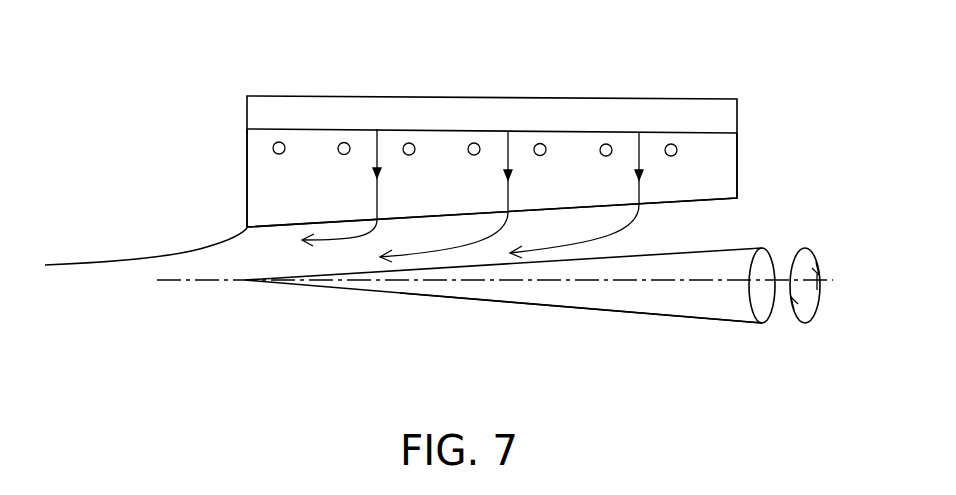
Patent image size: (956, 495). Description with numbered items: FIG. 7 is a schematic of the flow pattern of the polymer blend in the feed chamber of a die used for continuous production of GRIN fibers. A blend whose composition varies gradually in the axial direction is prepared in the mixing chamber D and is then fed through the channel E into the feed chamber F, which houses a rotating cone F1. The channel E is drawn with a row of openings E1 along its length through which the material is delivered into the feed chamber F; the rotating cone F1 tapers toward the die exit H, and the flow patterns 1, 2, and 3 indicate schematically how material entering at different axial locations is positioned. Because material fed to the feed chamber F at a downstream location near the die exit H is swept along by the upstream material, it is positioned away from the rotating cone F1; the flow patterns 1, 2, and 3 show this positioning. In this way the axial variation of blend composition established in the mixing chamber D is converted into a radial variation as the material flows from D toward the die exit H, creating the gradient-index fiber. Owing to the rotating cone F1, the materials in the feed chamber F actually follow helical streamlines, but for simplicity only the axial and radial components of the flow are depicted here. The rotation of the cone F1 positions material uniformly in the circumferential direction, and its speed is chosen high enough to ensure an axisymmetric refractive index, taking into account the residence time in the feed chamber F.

The mixing chamber D is at (428, 118).
The channel E is at (264, 194).
The electrodes E1 is at (276, 146).
The flow pattern 1 is at (576, 195).
The flow pattern 2 is at (446, 196).
The flow pattern 3 is at (341, 187).
The die exit H is at (195, 262).
The feed chamber F is at (307, 260).
The rotating cone F1 is at (566, 293).